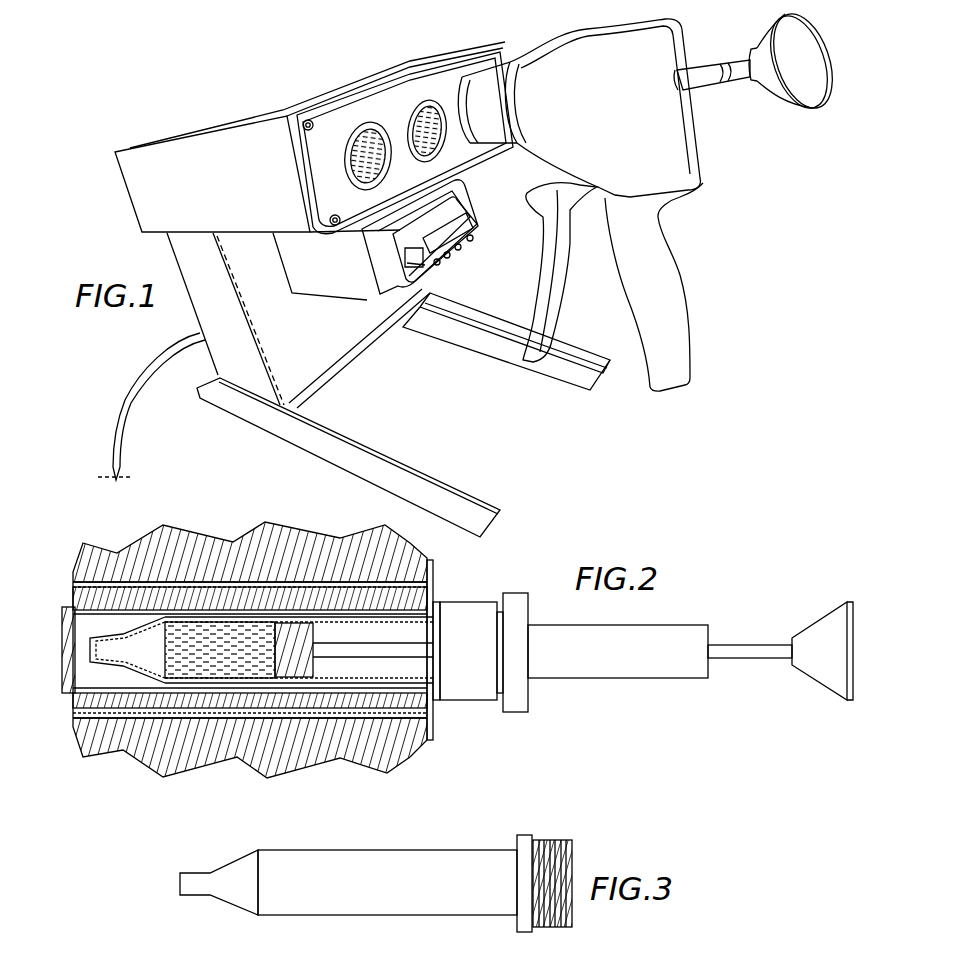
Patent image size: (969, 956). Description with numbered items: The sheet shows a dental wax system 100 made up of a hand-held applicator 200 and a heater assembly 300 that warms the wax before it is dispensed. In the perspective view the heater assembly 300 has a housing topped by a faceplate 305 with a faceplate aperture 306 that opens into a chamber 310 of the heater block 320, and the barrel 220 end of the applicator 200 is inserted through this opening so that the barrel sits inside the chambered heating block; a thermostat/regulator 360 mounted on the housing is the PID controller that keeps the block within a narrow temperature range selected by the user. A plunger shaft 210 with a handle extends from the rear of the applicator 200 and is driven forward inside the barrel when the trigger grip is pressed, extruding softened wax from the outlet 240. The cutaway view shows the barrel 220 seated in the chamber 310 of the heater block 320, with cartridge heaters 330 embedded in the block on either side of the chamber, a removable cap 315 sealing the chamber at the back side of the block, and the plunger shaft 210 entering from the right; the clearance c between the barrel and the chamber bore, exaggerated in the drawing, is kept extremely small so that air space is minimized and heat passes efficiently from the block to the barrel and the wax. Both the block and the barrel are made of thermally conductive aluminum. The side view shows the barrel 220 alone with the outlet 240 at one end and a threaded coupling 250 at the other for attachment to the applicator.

In FIG. 1, the wax system 100 is at (655, 423).
In FIG. 1, the applicator 200 is at (752, 177).
In FIG. 2, the applicator 200 is at (572, 706).
In FIG. 1, the plunger shaft 210 is at (697, 97).
In FIG. 2, the plunger shaft 210 is at (728, 650).
In FIG. 3, the barrel 220 is at (323, 855).
In FIG. 3, the outlet/nozzle 240 is at (180, 885).
In FIG. 3, the cartridge threaded end 250 is at (555, 840).
In FIG. 1, the heater assembly 300 is at (190, 124).
In FIG. 1, the faceplate 305 is at (325, 133).
In FIG. 2, the faceplate 305 is at (432, 713).
In FIG. 1, the faceplate aperture 306 is at (343, 137).
In FIG. 2, the faceplate aperture 306 is at (437, 602).
In FIG. 1, the chamber 310 is at (407, 100).
In FIG. 2, the removable cap 315 is at (72, 665).
In FIG. 2, the heater block 320 is at (158, 525).
In FIG. 2, the cartridge heater 330 is at (73, 572).
In FIG. 1, the thermostat/regulator 360 is at (398, 300).
In FIG. 2, the clearance c is at (432, 580).